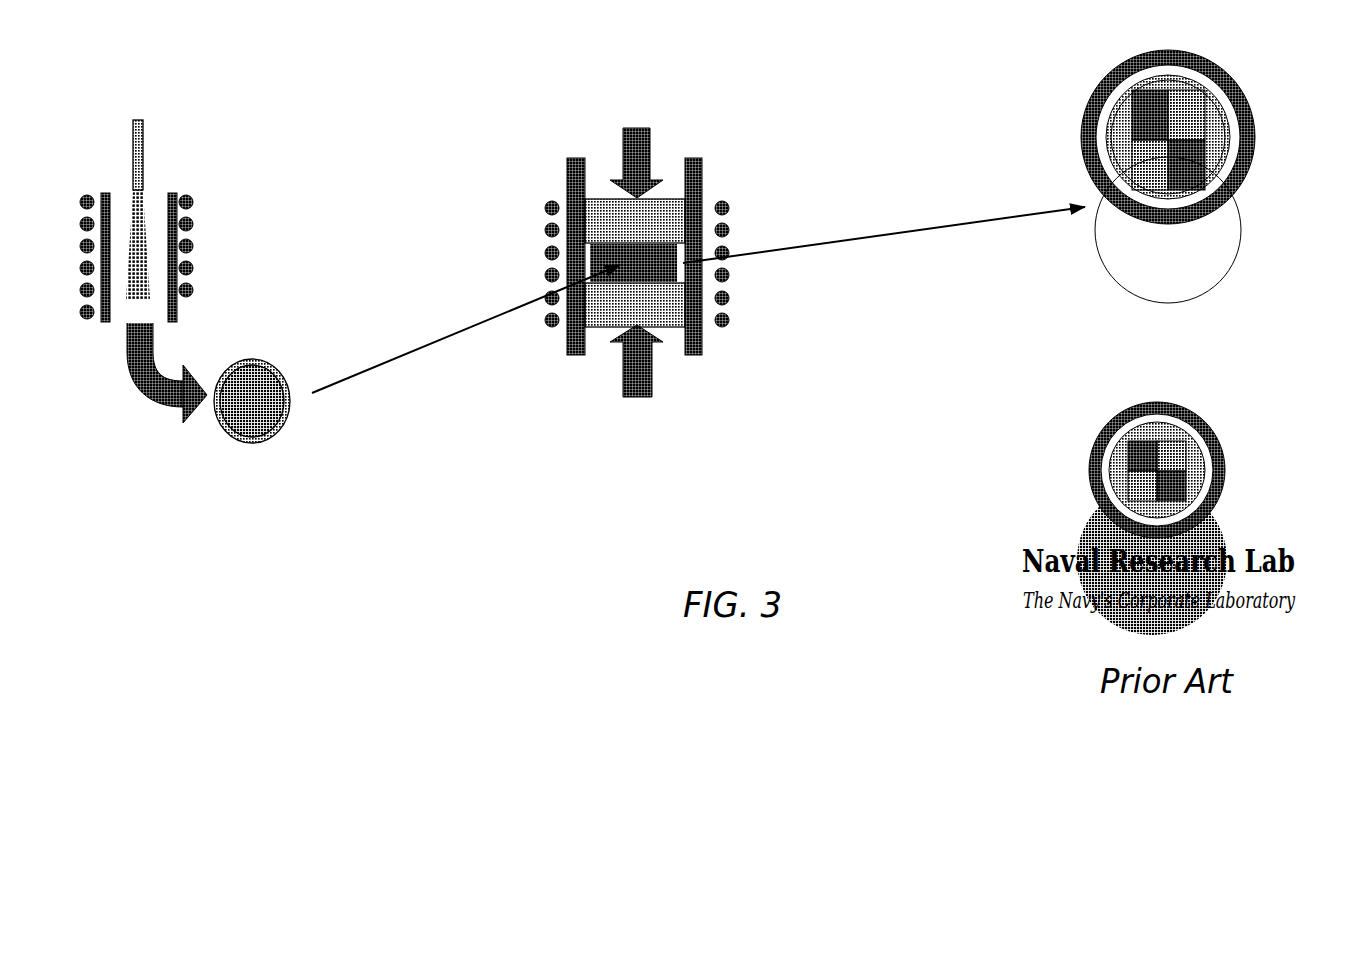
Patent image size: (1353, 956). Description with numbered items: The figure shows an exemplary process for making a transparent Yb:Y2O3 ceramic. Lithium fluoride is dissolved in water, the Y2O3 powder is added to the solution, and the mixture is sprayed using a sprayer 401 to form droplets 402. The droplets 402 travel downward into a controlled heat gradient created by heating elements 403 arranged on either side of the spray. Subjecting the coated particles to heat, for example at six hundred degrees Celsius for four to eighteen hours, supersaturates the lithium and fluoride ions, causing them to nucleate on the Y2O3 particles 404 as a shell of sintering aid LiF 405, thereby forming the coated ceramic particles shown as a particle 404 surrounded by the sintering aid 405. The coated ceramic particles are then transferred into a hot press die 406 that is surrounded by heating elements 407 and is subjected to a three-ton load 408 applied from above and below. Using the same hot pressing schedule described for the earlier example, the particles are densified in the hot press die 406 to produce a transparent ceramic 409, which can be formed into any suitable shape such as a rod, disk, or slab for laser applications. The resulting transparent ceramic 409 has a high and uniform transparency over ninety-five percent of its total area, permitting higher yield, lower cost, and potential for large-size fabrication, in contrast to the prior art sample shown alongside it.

The sprayer 401 is at (157, 138).
The droplets 402 is at (145, 200).
The heating elements 403 is at (192, 247).
The Y2O3 particles 404 is at (258, 402).
The sintering aid LiF 405 is at (275, 435).
The hot press die 406 is at (558, 170).
The heating elements 407 is at (742, 225).
The 3-ton load 408 is at (664, 285).
The transparent ceramic 409 is at (1095, 202).